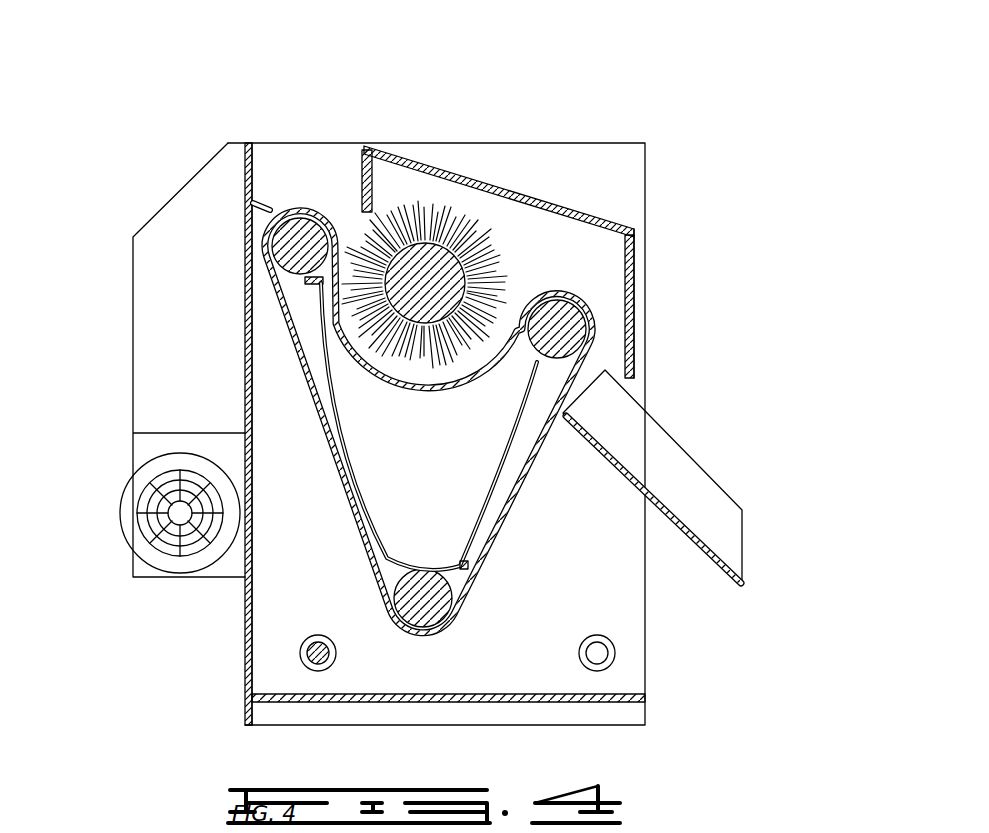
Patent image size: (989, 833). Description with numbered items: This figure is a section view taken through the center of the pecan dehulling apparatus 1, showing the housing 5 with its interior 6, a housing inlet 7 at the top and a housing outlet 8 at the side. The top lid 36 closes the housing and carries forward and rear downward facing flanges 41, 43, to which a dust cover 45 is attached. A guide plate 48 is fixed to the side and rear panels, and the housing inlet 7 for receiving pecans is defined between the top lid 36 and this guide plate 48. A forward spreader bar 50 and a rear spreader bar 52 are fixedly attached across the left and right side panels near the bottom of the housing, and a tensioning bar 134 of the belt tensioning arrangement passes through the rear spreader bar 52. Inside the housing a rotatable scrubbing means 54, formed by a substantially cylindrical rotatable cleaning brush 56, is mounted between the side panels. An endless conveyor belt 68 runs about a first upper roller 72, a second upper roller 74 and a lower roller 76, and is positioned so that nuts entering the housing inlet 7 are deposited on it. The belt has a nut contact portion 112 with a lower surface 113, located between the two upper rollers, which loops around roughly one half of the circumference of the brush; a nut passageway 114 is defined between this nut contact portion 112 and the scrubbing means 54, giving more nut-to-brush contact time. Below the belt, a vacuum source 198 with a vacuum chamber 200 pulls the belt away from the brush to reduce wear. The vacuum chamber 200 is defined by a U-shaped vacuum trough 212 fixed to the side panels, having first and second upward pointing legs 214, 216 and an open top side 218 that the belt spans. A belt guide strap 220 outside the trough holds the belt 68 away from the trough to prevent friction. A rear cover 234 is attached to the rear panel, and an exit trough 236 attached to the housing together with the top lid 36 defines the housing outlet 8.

The pecan dehulling apparatus 1 is at (459, 376).
The housing 5 is at (580, 62).
The interior 6 is at (392, 563).
The housing inlet 7 is at (317, 175).
The housing outlet 8 is at (637, 392).
The top lid 36 is at (550, 197).
The forward downward facing flange 41 is at (636, 240).
The rear downward facing flange 43 is at (360, 193).
The dust cover 45 is at (318, 167).
The guide plate 48 is at (267, 203).
The forward spreader bar 50 is at (615, 660).
The rear spreader bar 52 is at (303, 667).
The rotatable scrubbing means 54 is at (443, 229).
The rotatable cleaning brush 56 is at (427, 202).
The endless conveyor belt 68 is at (407, 533).
The first upper roller 72 is at (273, 235).
The second upper roller 74 is at (578, 330).
The lower roller 76 is at (418, 628).
The nut contact portion 112 is at (526, 353).
The lower surface 113 is at (527, 293).
The nut passageway 114 is at (350, 348).
The tensioning bar 134 is at (315, 672).
The vacuum source 198 is at (542, 454).
The vacuum chamber 200 is at (530, 447).
The U-shaped vacuum trough 212 is at (450, 612).
The first upward pointing leg 214 is at (542, 454).
The second upward pointing leg 216 is at (308, 370).
The open top side 218 is at (542, 454).
The belt guide strap 220 is at (468, 566).
The rear cover 234 is at (133, 265).
The exit trough 236 is at (742, 512).